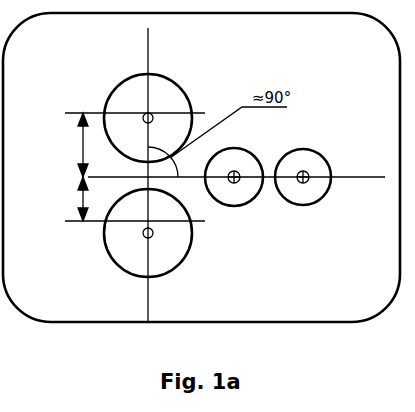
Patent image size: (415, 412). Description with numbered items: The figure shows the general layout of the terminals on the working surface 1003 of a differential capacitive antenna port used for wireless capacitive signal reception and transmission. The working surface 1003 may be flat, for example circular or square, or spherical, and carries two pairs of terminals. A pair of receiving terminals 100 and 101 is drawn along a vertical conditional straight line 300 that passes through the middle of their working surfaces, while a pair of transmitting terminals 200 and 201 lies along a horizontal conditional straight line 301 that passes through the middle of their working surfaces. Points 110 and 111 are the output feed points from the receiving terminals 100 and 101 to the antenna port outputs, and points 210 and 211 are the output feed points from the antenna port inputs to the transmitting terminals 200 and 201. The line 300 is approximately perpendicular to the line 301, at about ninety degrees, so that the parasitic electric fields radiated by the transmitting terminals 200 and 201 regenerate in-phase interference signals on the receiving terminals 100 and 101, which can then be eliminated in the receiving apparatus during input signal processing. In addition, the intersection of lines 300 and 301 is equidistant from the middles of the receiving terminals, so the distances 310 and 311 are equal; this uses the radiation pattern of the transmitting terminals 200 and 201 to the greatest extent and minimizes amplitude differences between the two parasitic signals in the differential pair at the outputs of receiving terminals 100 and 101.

The working surface 1003 is at (263, 13).
The conditional straight line 300 is at (148, 36).
The conditional straight line 301 is at (236, 164).
The receiving terminal 100 is at (104, 112).
The output feed point 110 is at (151, 113).
The receiving terminal 101 is at (111, 244).
The output feed point 111 is at (156, 223).
The transmitting terminal 200 is at (224, 141).
The output feed point 210 is at (234, 183).
The transmitting terminal 201 is at (295, 142).
The output feed point 211 is at (303, 183).
The distance 310 is at (62, 145).
The distance 311 is at (61, 199).